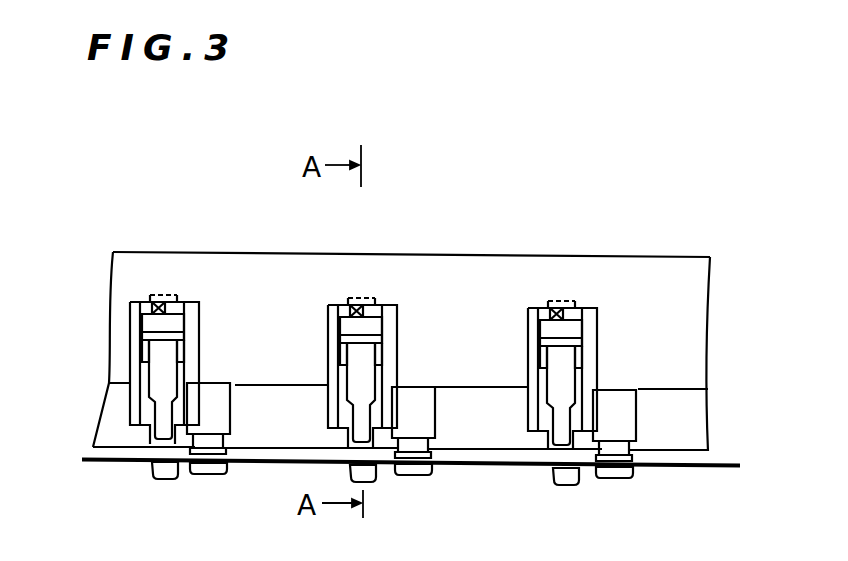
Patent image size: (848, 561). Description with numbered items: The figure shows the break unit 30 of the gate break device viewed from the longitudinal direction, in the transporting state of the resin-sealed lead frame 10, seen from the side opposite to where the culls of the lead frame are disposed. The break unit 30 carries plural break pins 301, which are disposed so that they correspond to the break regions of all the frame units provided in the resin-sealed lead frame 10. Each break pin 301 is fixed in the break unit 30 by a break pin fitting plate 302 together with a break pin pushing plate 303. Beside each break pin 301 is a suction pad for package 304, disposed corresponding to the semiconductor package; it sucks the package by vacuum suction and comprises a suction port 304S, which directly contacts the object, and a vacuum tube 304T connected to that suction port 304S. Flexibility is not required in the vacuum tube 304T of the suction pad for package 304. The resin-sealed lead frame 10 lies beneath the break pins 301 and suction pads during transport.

The break unit 30 is at (470, 243).
The resin-sealed lead frame 10 is at (411, 500).
The break pin 301 is at (108, 376).
The break pin fitting plate 302 is at (383, 350).
The break pin pushing plate 303 is at (350, 327).
The suction pad for package 304 is at (625, 297).
The vacuum tube 304T is at (580, 322).
The suction port 304S is at (657, 332).